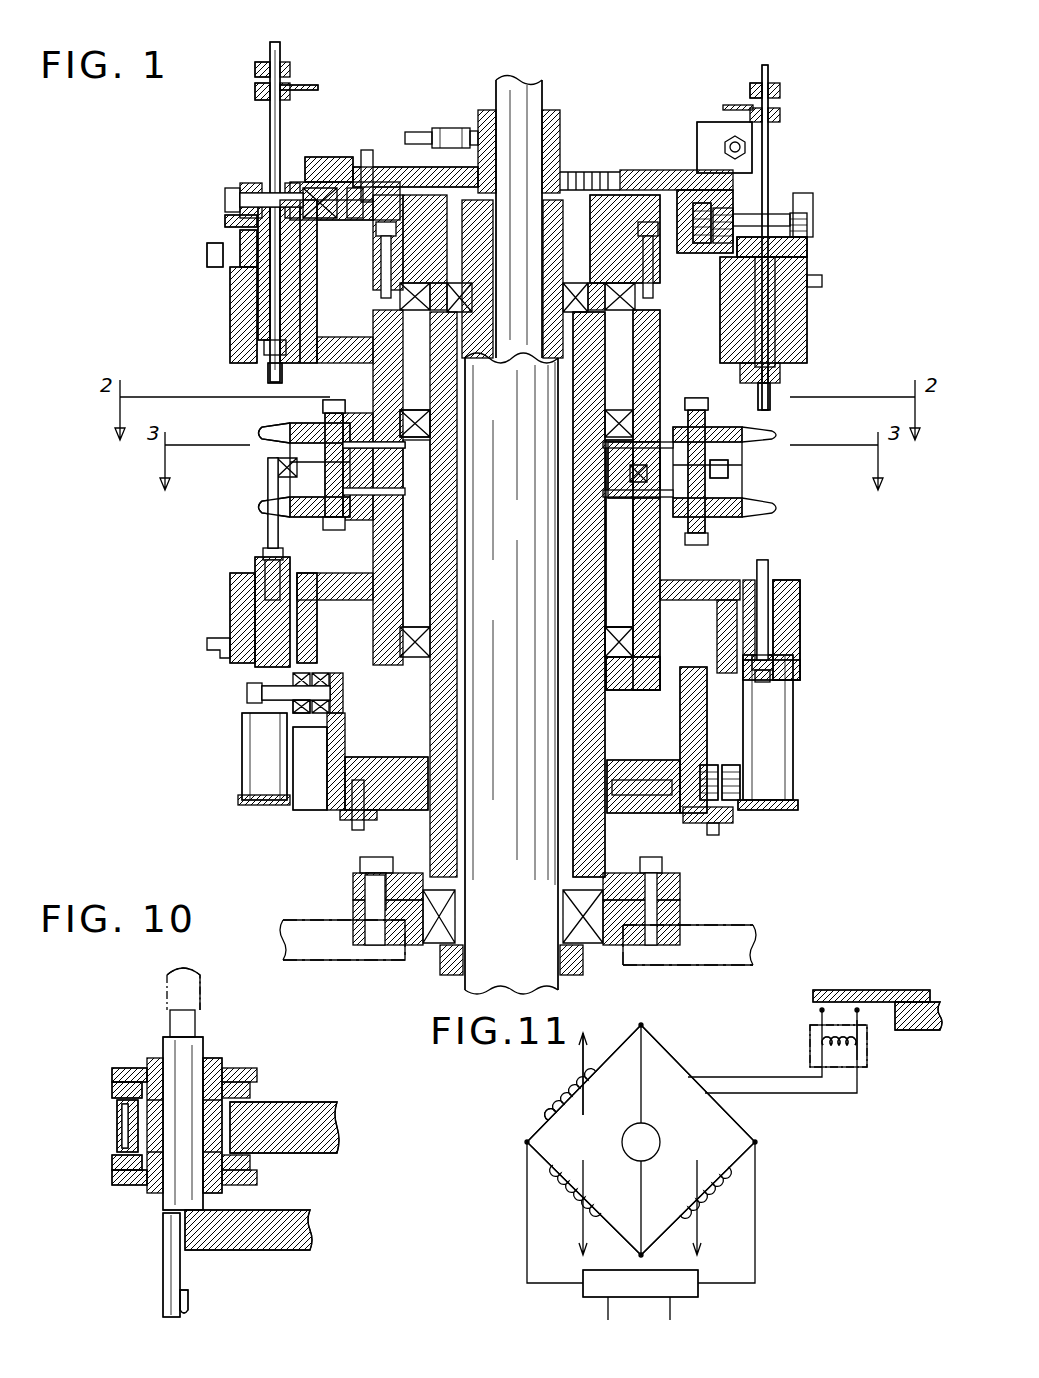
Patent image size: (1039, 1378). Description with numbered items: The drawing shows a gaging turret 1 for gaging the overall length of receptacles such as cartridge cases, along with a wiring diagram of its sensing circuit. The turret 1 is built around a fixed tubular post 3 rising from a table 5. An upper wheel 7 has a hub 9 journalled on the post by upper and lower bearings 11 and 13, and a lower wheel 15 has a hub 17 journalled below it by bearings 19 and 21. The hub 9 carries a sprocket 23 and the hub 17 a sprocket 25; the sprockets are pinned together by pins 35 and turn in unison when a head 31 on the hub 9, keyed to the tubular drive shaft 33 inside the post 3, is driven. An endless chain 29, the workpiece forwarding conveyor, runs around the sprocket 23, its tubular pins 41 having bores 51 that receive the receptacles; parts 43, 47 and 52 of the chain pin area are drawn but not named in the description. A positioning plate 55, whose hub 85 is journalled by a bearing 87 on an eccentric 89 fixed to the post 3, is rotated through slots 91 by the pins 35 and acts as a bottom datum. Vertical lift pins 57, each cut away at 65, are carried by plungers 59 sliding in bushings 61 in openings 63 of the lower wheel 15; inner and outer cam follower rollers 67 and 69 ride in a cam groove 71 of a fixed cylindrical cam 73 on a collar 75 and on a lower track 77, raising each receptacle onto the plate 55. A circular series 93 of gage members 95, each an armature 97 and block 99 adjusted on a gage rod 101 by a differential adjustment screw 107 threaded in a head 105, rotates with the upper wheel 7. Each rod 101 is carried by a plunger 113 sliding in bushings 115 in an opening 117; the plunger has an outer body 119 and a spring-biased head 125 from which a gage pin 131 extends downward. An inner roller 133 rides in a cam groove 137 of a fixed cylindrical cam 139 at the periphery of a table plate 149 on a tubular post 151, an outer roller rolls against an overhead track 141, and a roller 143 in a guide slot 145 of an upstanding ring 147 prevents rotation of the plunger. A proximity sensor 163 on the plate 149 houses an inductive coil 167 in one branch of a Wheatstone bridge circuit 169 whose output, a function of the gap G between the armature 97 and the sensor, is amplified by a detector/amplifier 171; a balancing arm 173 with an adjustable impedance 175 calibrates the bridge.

In FIG. 1, the gaging turret 1 is at (841, 84).
In FIG. 1, the fixed tubular post 3 is at (609, 858).
In FIG. 1, the table 5 is at (751, 34).
In FIG. 1, the upper wheel 7 is at (820, 328).
In FIG. 1, the hub 9 is at (688, 398).
In FIG. 1, the upper bearing 11 is at (664, 300).
In FIG. 1, the lower bearing 13 is at (430, 428).
In FIG. 1, the lower wheel 15 is at (816, 628).
In FIG. 1, the hub 17 is at (646, 674).
In FIG. 1, the upper bearing 19 is at (600, 504).
In FIG. 1, the lower bearing 21 is at (640, 646).
In FIG. 1, the sprocket 23 is at (782, 436).
In FIG. 10, the sprocket 23 is at (310, 1104).
In FIG. 1, the sprocket 25 is at (782, 508).
In FIG. 10, the endless chain 29 is at (278, 1074).
In FIG. 1, the head 31 is at (588, 238).
In FIG. 1, the tubular drive shaft 33 is at (577, 175).
In FIG. 1, the pins 35 is at (332, 400).
In FIG. 10, the tubular pins 41 is at (206, 1062).
In FIG. 10, the ring 43 is at (112, 1090).
In FIG. 10, the washer 47 is at (114, 1068).
In FIG. 10, the bores 51 is at (168, 1120).
In FIG. 10, the gauge element 52 is at (118, 1132).
In FIG. 1, the positioning plate 55 is at (730, 466).
In FIG. 10, the positioning plate 55 is at (284, 1250).
In FIG. 1, the lift pins 57 is at (266, 506).
In FIG. 10, the lift pins 57 is at (172, 1302).
In FIG. 1, the plunger 59 is at (232, 616).
In FIG. 1, the bushing 61 is at (255, 580).
In FIG. 1, the vertical opening 63 is at (297, 610).
In FIG. 1, the cutaway 65 is at (266, 466).
In FIG. 10, the cutaway 65 is at (182, 1268).
In FIG. 1, the inner cam follower roller 67 is at (330, 703).
In FIG. 1, the outer cam follower roller 69 is at (308, 726).
In FIG. 1, the peripheral cam groove 71 is at (338, 692).
In FIG. 1, the fixed cylindrical cam 73 is at (345, 736).
In FIG. 1, the collar 75 is at (662, 768).
In FIG. 1, the lower track 77 is at (292, 720).
In FIG. 1, the hub 85 is at (344, 520).
In FIG. 1, the bearing 87 is at (604, 484).
In FIG. 1, the eccentric 89 is at (415, 468).
In FIG. 1, the slots 91 is at (303, 462).
In FIG. 1, the circular series of gage members 93 is at (781, 60).
In FIG. 1, the gage member 95 is at (260, 130).
In FIG. 1, the tongue 97 is at (320, 87).
In FIG. 11, the tongue 97 is at (870, 968).
In FIG. 1, the block 99 is at (254, 90).
In FIG. 11, the block 99 is at (928, 968).
In FIG. 1, the vertical gage rod 101 is at (278, 42).
In FIG. 1, the head 105 is at (785, 78).
In FIG. 1, the differential adjustment screw 107 is at (258, 60).
In FIG. 1, the plunger 113 is at (236, 308).
In FIG. 1, the bushings 115 is at (246, 357).
In FIG. 1, the vertical opening 117 is at (302, 305).
In FIG. 1, the outer body 119 is at (217, 245).
In FIG. 1, the head 125 is at (238, 335).
In FIG. 1, the gage pin 131 is at (266, 375).
In FIG. 10, the gage pin 131 is at (200, 975).
In FIG. 1, the inner cam follower roller 133 is at (692, 220).
In FIG. 1, the peripheral cam groove 137 is at (362, 214).
In FIG. 1, the fixed cylindrical cam 139 is at (706, 255).
In FIG. 1, the overhead track 141 is at (312, 158).
In FIG. 1, the outer roller 143 is at (240, 186).
In FIG. 1, the vertical guide slot 145 is at (230, 220).
In FIG. 1, the upstanding ring 147 is at (810, 262).
In FIG. 1, the circular table plate 149 is at (395, 167).
In FIG. 1, the tubular post 151 is at (540, 74).
In FIG. 1, the proximity sensor 163 is at (697, 142).
In FIG. 11, the proximity sensor 163 is at (876, 1076).
In FIG. 11, the inductive coil 167 is at (848, 1046).
In FIG. 11, the Wheatstone type bridge circuit 169 is at (686, 1062).
In FIG. 11, the detector/amplifier 171 is at (658, 1292).
In FIG. 11, the balancing arm 173 is at (546, 1128).
In FIG. 11, the adjustable impedance 175 is at (580, 1082).
In FIG. 1, the gap G is at (698, 106).
In FIG. 11, the gap G is at (800, 1009).